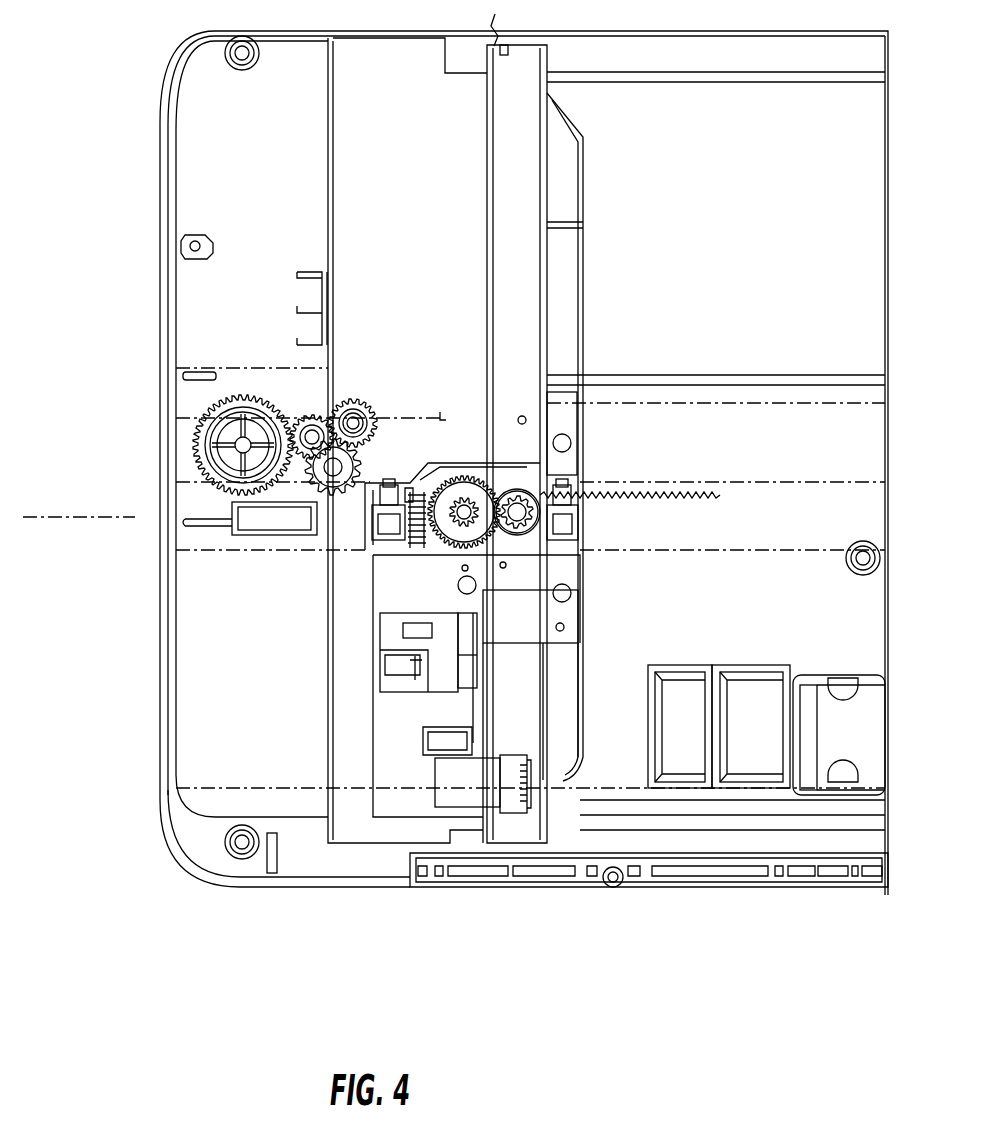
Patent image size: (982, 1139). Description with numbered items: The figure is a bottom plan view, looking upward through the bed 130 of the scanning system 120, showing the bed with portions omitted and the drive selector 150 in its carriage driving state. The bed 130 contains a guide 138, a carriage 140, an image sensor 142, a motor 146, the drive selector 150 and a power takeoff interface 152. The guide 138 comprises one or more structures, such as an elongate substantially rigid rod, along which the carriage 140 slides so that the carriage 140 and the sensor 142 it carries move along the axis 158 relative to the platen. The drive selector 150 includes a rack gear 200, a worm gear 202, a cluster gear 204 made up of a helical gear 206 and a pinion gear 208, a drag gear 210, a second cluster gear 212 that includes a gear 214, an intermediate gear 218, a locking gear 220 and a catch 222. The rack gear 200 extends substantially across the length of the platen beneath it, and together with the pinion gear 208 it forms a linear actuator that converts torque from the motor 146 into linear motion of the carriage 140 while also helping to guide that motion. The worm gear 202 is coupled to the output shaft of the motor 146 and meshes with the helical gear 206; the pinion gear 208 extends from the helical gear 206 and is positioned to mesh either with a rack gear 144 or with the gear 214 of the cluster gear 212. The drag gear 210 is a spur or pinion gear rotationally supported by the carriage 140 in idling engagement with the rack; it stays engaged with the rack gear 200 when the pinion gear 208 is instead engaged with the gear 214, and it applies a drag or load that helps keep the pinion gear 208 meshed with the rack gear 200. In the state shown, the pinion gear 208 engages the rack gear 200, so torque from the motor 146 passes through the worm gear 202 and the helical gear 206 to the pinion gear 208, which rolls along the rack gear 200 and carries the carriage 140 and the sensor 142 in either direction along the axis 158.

The scanning system 120 is at (130, 113).
The bed 130 is at (157, 196).
The guide 138 is at (793, 552).
The carriage 140 is at (580, 622).
The image sensor 142 is at (487, 297).
The rack gear 144 is at (630, 487).
The motor 146 is at (385, 600).
The drive selector 150 is at (603, 420).
The power takeoff interface 152 is at (241, 396).
The axis 158 is at (90, 517).
The rack gear 200 is at (672, 497).
The worm gear 202 is at (390, 540).
The cluster gear 204 is at (467, 472).
The helical gear 206 is at (458, 470).
The pinion gear 208 is at (472, 525).
The drag gear 210 is at (528, 525).
The cluster gear 212 is at (317, 492).
The gear 214 is at (315, 483).
The intermediate gear 218 is at (300, 418).
The locking gear 220 is at (360, 455).
The catch 222 is at (349, 398).